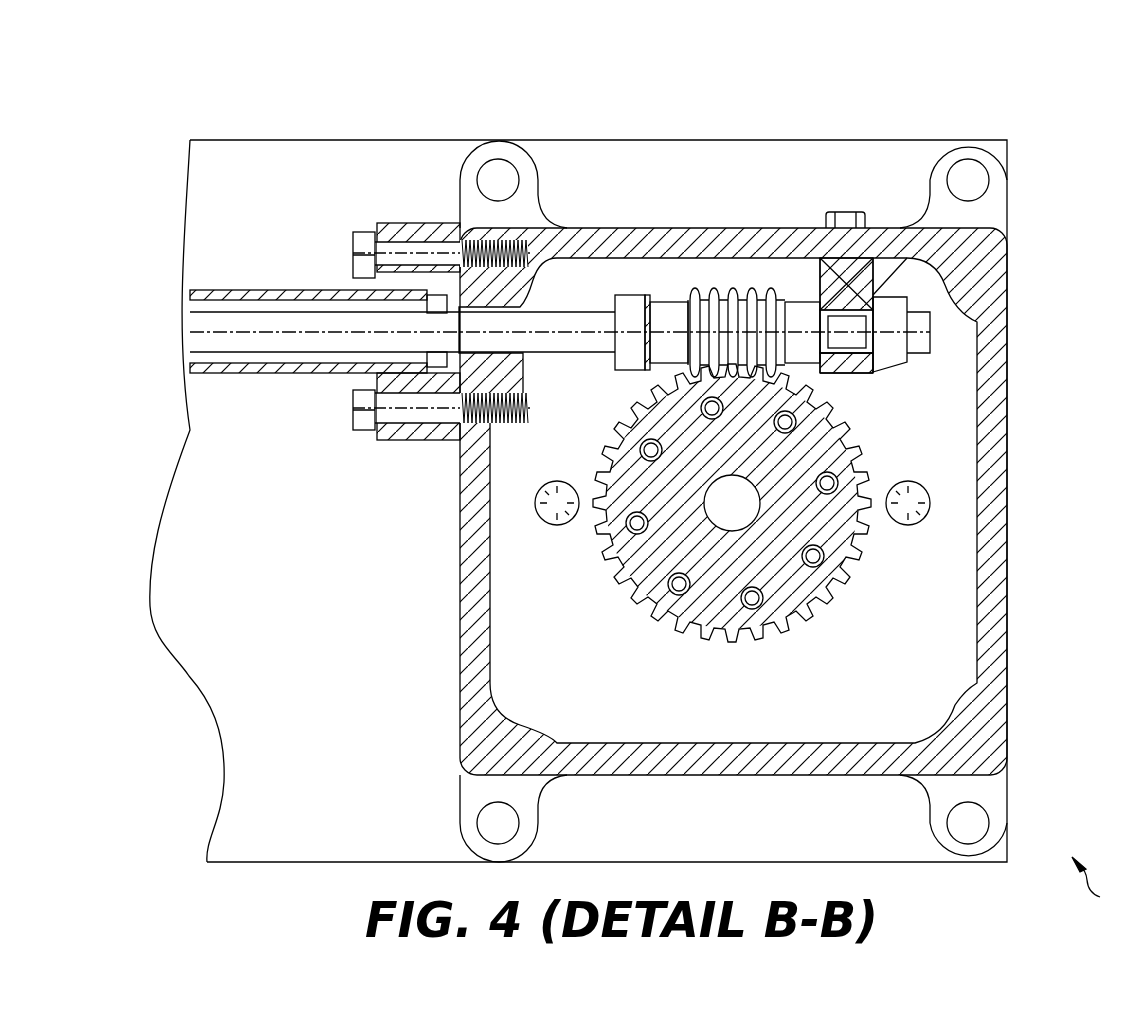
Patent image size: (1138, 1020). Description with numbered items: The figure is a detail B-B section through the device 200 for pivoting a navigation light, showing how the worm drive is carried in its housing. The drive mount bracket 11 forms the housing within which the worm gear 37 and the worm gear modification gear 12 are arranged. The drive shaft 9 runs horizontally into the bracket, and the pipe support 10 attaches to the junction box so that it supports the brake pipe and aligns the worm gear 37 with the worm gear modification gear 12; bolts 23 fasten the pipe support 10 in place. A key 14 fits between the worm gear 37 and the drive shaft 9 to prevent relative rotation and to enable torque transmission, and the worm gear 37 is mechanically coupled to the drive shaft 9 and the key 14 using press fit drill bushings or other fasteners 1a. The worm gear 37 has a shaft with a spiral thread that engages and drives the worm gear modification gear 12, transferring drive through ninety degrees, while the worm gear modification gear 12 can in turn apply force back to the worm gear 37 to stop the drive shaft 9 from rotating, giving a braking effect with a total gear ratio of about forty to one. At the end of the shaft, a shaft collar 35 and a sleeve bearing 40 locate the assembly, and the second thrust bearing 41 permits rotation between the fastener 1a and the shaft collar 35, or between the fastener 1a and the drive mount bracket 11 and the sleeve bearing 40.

The drive shaft 9 is at (275, 343).
The press fit drill bushing 1a is at (853, 218).
The bolt 23 is at (377, 232).
The pipe support 10 is at (405, 223).
The shaft collar 35 is at (632, 315).
The second thrust bearing 41 is at (938, 227).
The key 14 is at (643, 78).
The worm gear 37 is at (725, 295).
The sleeve bearing 40 is at (850, 320).
The drive mount bracket 11 is at (893, 227).
The worm gear modification gear 12 is at (845, 590).
The device 200 is at (1104, 883).